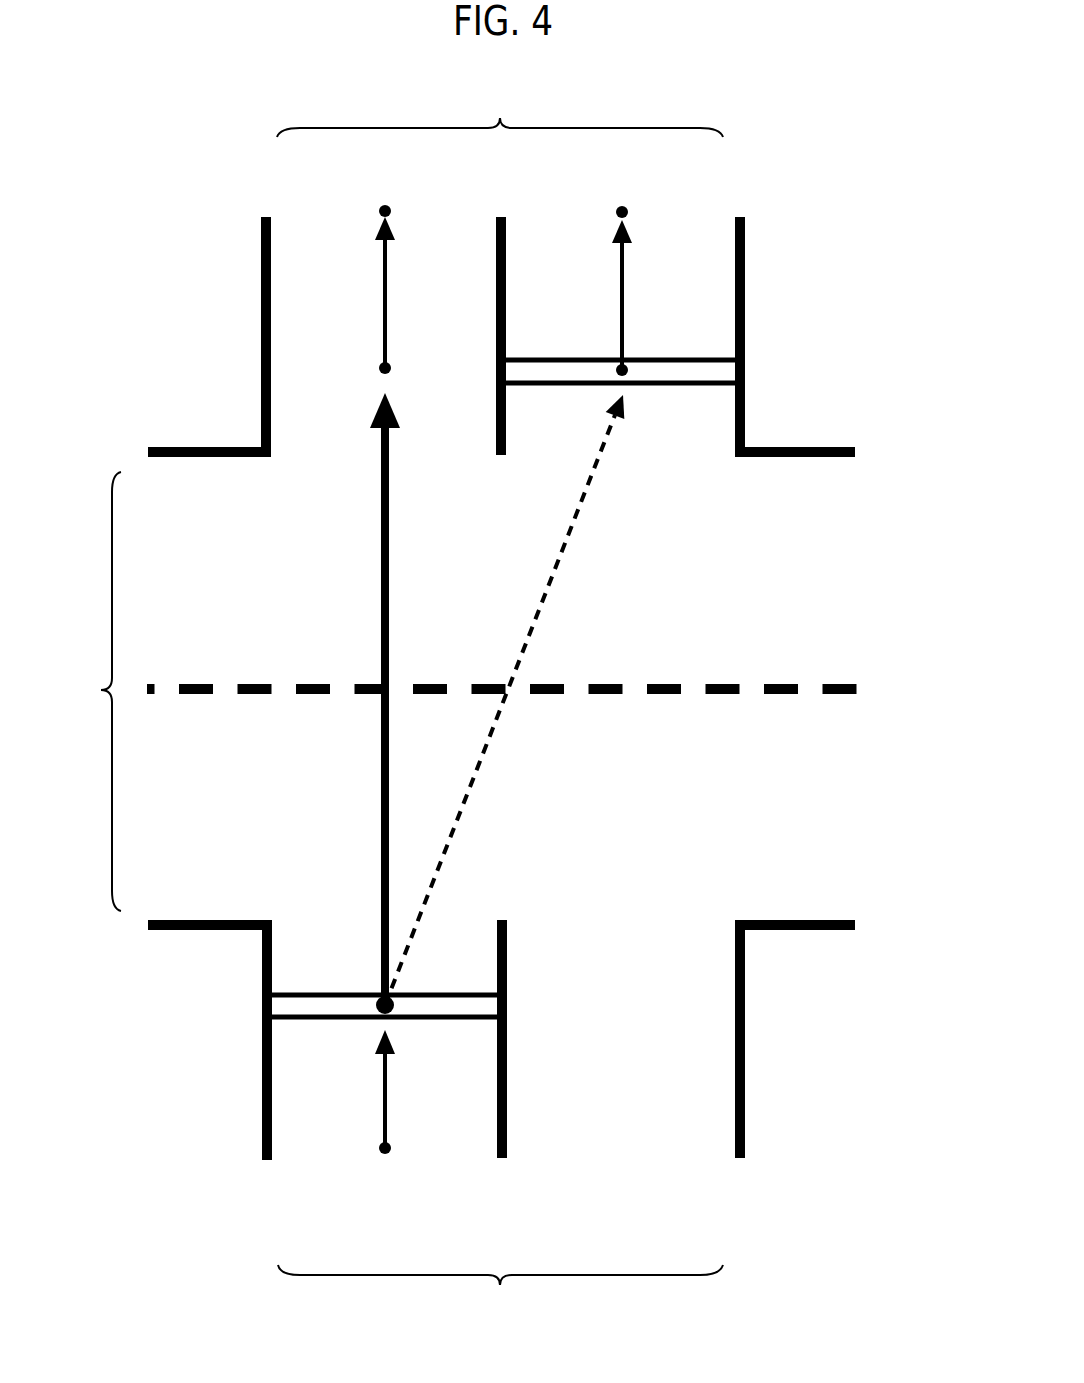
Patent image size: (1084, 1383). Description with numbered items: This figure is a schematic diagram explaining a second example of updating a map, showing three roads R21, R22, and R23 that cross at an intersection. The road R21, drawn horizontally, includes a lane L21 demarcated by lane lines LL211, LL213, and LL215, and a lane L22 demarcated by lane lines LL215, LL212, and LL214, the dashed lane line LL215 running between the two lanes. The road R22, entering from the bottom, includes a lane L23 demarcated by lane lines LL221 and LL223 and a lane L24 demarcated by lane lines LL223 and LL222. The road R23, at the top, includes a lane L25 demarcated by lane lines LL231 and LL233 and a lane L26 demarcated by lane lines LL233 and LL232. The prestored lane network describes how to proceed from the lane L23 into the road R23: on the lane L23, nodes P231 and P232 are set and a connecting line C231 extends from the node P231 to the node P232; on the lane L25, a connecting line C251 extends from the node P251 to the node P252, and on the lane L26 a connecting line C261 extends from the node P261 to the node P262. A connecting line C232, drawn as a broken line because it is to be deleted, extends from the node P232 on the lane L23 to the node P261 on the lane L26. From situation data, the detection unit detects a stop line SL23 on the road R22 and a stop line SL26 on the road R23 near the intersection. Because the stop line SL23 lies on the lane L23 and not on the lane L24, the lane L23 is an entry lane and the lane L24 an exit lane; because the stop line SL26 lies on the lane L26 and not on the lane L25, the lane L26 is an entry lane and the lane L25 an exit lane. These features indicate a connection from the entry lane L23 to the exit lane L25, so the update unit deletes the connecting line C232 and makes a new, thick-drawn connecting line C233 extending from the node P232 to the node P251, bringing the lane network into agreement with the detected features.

The road R21 is at (81, 691).
The road R22 is at (500, 1299).
The road R23 is at (500, 110).
The lane L21 is at (848, 550).
The lane L22 is at (845, 813).
The lane L23 is at (320, 1153).
The lane L24 is at (662, 1150).
The lane L25 is at (315, 210).
The lane L26 is at (680, 218).
The lane line LL211 is at (202, 445).
The lane line LL212 is at (200, 930).
The lane line LL213 is at (802, 423).
The lane line LL214 is at (777, 930).
The lane line LL215 is at (858, 689).
The lane line LL221 is at (257, 1097).
The lane line LL222 is at (743, 1082).
The lane line LL223 is at (500, 1160).
The lane line LL231 is at (263, 318).
The lane line LL232 is at (743, 293).
The lane line LL233 is at (500, 217).
The stop line SL23 is at (287, 993).
The stop line SL26 is at (523, 360).
The node P231 is at (378, 1152).
The node P232 is at (393, 1000).
The node P251 is at (382, 374).
The node P252 is at (383, 214).
The node P261 is at (627, 376).
The node P262 is at (620, 215).
The connecting line C231 is at (390, 1122).
The connecting line C232 is at (458, 819).
The connecting line C233 is at (389, 634).
The connecting line C251 is at (388, 327).
The connecting line C261 is at (626, 322).